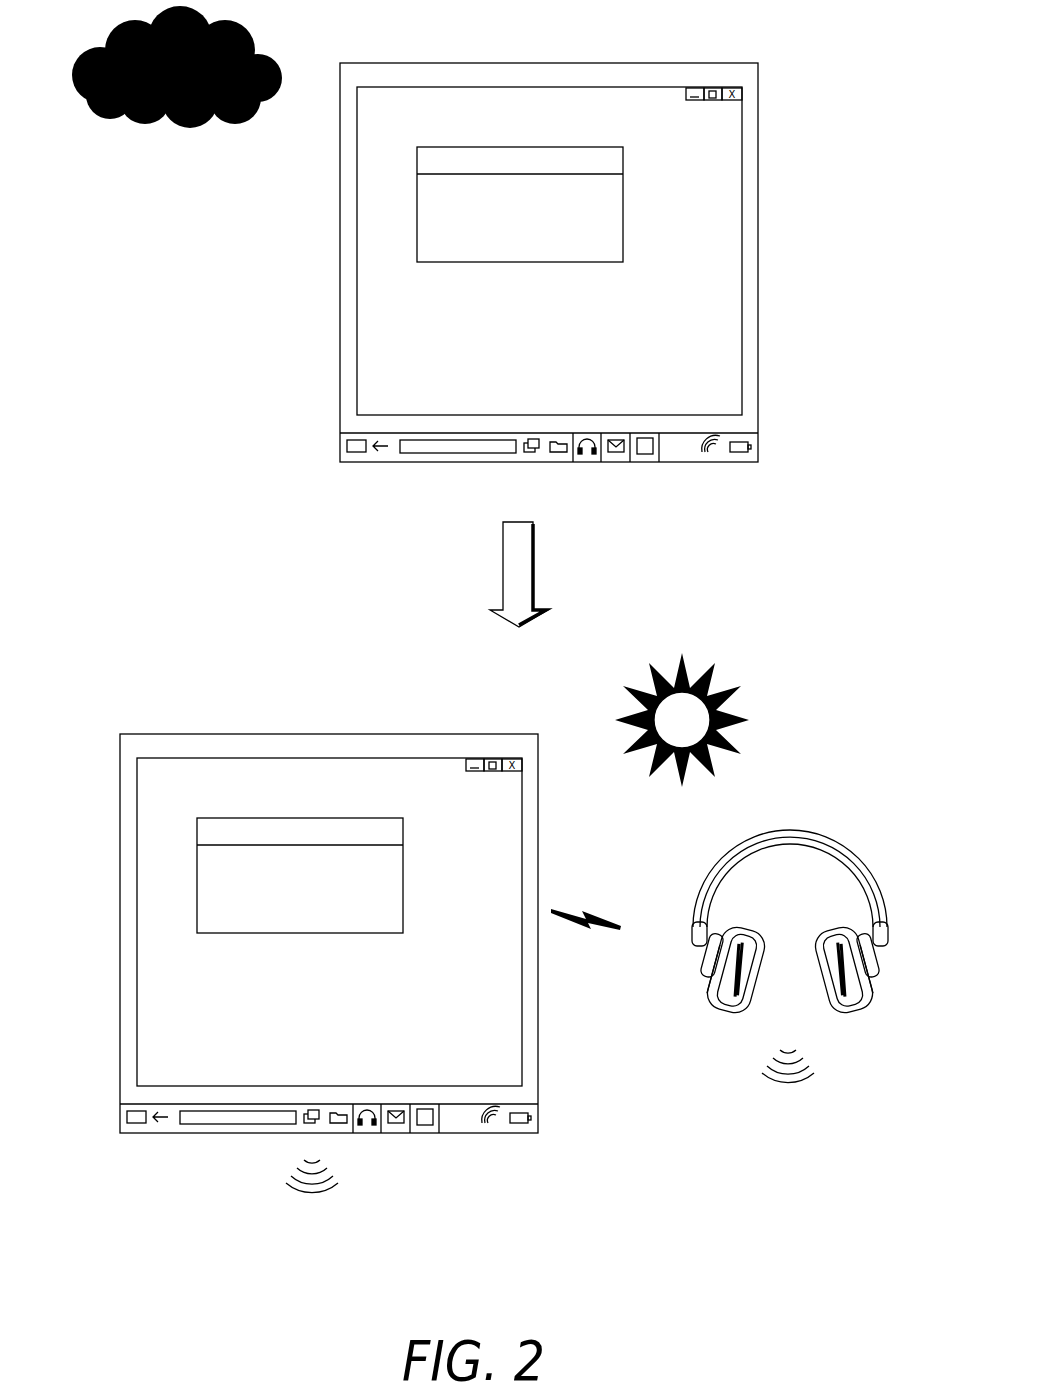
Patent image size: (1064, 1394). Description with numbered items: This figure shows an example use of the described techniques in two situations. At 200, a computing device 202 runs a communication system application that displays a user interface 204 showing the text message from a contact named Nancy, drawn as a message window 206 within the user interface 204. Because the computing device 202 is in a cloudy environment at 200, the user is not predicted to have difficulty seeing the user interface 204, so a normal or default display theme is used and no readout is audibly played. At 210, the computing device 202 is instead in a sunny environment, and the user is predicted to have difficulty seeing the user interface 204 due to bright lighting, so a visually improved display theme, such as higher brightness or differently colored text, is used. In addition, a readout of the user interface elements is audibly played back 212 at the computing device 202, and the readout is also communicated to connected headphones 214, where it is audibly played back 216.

The cloudy environment scenario 200 is at (822, 45).
The computing device 202 is at (414, 63).
The user interface 204 is at (525, 88).
The message notification 206 is at (417, 168).
The sunny environment scenario 210 is at (822, 657).
The audible playback at the computing device 212 is at (160, 1202).
The headphones 214 is at (807, 822).
The audible playback at the headphones 216 is at (697, 1165).